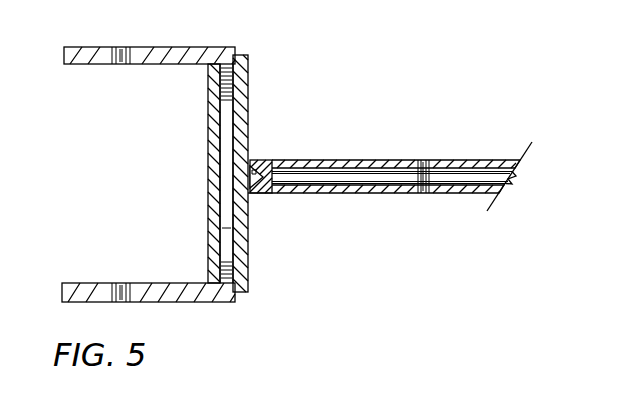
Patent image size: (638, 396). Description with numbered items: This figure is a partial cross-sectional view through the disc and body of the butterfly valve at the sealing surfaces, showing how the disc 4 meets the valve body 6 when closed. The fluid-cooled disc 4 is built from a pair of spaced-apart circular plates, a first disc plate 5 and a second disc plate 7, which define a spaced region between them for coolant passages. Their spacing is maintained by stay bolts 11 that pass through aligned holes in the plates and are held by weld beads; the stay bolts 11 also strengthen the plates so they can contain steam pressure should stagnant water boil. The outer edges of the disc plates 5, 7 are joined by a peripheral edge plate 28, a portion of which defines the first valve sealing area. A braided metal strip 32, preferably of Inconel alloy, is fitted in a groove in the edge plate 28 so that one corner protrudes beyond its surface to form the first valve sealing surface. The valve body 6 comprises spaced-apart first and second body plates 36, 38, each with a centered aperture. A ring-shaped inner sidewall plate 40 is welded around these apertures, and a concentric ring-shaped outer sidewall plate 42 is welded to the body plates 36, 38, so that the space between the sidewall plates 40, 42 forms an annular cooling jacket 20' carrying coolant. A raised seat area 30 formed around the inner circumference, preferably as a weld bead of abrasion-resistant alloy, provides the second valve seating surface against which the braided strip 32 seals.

The circular disc 4 is at (476, 160).
The first disc plate 5 is at (453, 193).
The valve body 6 is at (97, 72).
The second disc plate 7 is at (444, 160).
The stay bolts 11 is at (424, 194).
The fluid jacket 20' is at (266, 173).
The peripheral edge plate 28 is at (252, 166).
The seat area 30 is at (251, 193).
The braided metal strip 32 is at (283, 162).
The first body plate 36 is at (195, 47).
The second body plate 38 is at (170, 283).
The inner sidewall plate 40 is at (249, 258).
The outer sidewall plate 42 is at (208, 169).